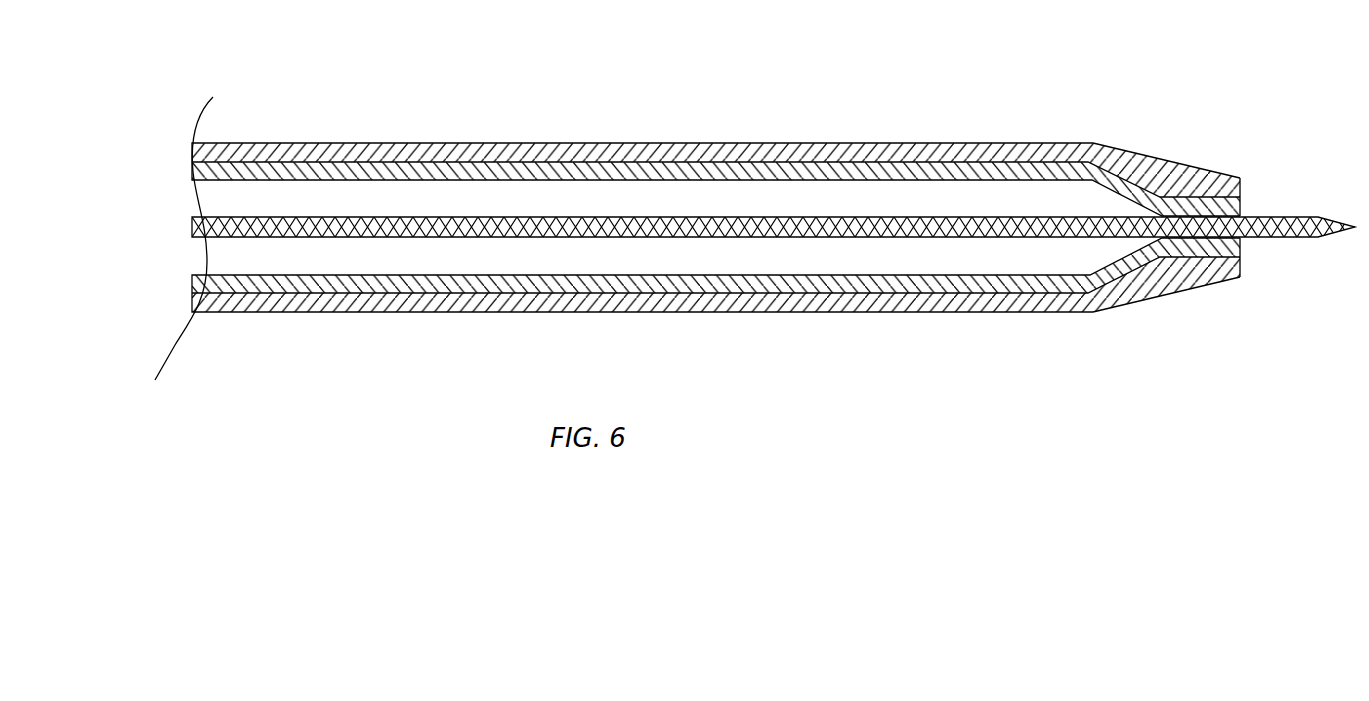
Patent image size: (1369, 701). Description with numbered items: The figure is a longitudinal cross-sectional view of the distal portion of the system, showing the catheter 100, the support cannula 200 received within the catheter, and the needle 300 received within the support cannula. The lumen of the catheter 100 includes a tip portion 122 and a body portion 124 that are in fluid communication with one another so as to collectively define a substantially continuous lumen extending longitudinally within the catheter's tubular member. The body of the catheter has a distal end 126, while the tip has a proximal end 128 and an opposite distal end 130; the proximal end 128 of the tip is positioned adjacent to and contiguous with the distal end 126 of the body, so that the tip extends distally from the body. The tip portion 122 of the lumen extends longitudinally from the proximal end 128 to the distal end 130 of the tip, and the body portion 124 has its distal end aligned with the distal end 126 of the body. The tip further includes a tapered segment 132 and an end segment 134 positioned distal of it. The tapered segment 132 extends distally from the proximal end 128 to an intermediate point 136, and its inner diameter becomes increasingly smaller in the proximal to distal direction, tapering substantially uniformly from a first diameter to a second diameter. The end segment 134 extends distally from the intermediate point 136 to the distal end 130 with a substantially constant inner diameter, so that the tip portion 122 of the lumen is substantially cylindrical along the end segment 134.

The catheter 100 is at (716, 220).
The support cannula 200 is at (716, 215).
The needle 300 is at (430, 218).
The tip portion 122 is at (1183, 225).
The body portion 124 is at (1000, 160).
The distal end 126 is at (1093, 142).
The proximal end 128 is at (1085, 313).
The distal end 130 is at (1240, 280).
The tapered segment 132 is at (1147, 157).
The end segment 134 is at (1200, 285).
The intermediate point 136 is at (1162, 257).